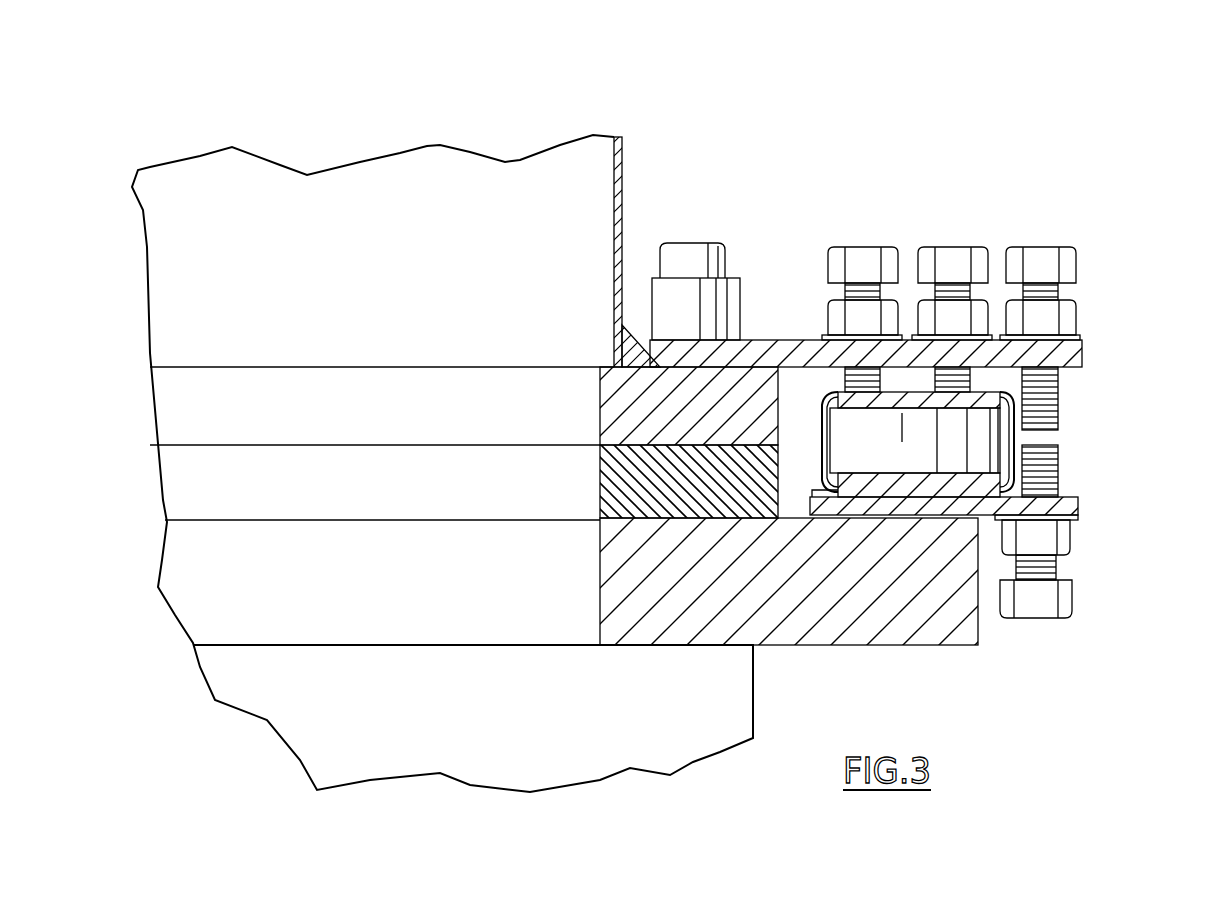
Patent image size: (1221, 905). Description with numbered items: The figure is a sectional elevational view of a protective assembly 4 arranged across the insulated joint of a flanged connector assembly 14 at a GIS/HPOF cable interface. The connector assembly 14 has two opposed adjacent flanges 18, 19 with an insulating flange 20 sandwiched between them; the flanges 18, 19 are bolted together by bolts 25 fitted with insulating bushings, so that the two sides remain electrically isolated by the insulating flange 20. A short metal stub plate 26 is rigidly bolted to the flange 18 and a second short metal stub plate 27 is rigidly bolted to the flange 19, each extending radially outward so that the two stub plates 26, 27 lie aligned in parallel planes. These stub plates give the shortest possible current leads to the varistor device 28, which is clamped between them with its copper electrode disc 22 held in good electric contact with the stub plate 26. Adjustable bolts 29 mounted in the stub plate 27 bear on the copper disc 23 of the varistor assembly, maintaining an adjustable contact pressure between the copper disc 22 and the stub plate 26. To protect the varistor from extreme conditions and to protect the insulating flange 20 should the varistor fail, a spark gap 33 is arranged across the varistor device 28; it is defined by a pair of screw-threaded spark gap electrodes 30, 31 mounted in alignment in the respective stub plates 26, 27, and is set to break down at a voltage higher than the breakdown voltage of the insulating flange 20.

The protective assembly 4 is at (896, 176).
The flanged connector assembly 14 is at (136, 400).
The opposed flange 18 is at (852, 650).
The opposed flange 19 is at (600, 378).
The insulating flange 20 is at (600, 462).
The copper electrode disc 22 is at (955, 471).
The copper disc 23 is at (843, 410).
The bolts 25 is at (688, 243).
The metal stub plate 26 is at (1080, 503).
The metal stub plate 27 is at (1084, 358).
The varistor device 28 is at (1052, 468).
The adjustable bolts 29 is at (862, 247).
The spark gap electrode 30 is at (1073, 598).
The spark gap electrode 31 is at (1038, 247).
The spark gap 33 is at (1052, 430).